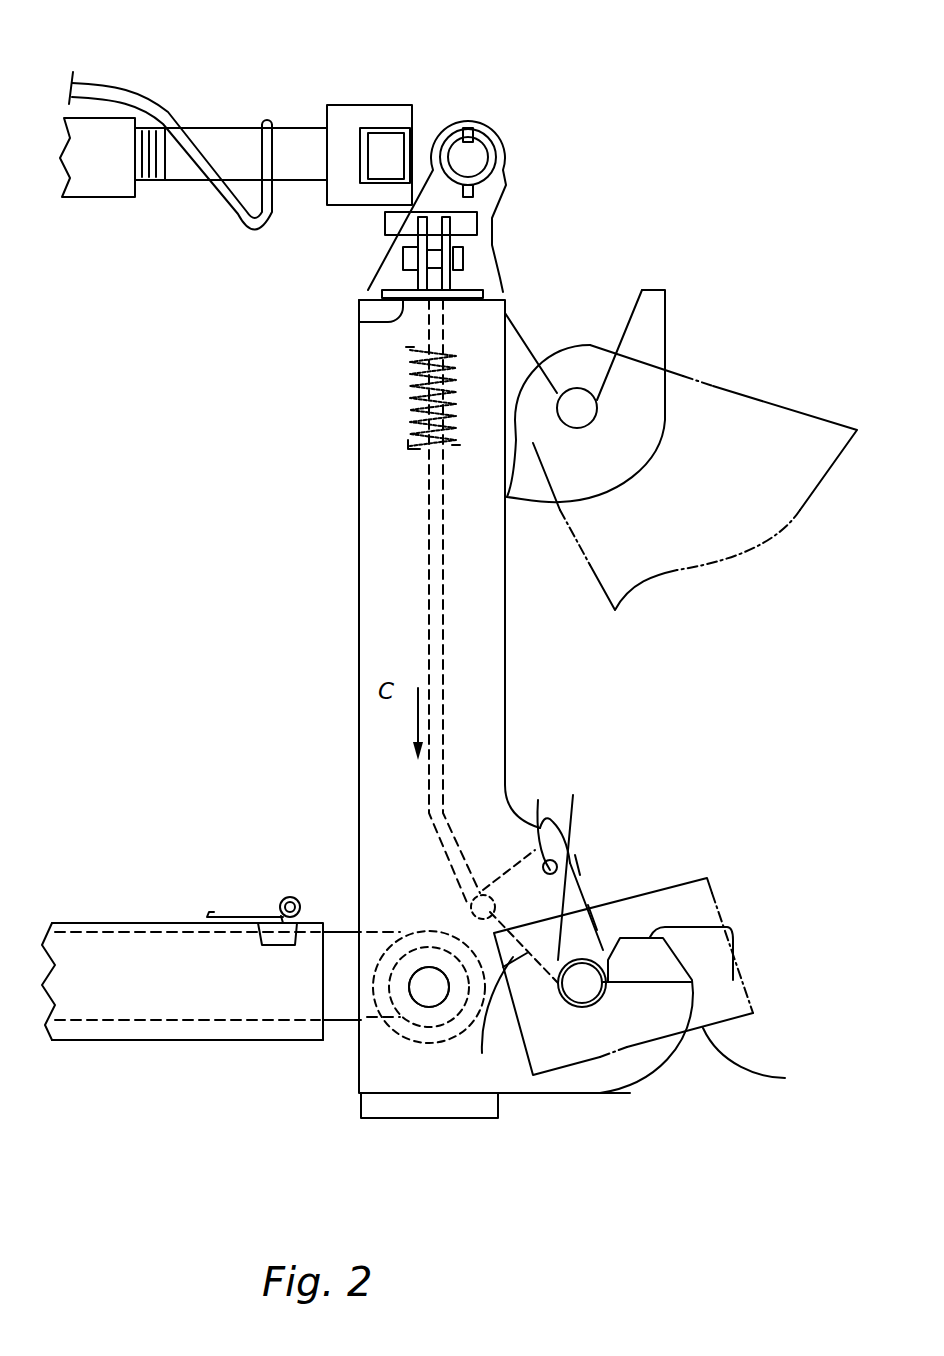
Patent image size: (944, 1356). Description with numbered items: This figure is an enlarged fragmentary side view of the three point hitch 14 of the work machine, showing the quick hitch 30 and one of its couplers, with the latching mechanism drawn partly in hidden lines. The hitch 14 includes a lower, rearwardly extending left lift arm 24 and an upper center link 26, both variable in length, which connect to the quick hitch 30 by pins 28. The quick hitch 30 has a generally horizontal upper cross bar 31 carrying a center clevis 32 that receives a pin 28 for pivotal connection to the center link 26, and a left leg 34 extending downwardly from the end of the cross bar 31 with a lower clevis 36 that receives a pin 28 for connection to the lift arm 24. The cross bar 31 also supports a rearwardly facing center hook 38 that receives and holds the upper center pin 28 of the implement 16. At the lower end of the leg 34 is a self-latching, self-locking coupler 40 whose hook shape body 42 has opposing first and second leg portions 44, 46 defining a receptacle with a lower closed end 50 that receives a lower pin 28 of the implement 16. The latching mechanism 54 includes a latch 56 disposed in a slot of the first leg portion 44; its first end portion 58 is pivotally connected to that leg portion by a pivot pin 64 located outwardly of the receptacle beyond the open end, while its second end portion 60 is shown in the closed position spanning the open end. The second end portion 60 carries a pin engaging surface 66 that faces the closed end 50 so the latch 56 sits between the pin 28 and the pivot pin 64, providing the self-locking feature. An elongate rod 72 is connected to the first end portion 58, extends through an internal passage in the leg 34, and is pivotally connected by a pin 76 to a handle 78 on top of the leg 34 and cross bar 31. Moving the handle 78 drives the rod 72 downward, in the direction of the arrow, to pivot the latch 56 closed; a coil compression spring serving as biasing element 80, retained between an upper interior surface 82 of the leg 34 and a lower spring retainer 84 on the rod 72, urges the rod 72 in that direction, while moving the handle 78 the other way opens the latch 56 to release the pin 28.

The hitch 14 is at (222, 1046).
The implement 16 is at (786, 1078).
The left lift arm 24 is at (103, 1040).
The center link 26 is at (300, 127).
The pin 28 is at (478, 128).
The quick hitch 30 is at (504, 212).
The cross bar 31 is at (505, 287).
The center clevis 32 is at (522, 158).
The left leg 34 is at (359, 638).
The clevis 36 is at (417, 968).
The center hook 38 is at (668, 310).
The coupler 40 is at (708, 1006).
The hook shape body 42 is at (662, 1062).
The first leg portion 44 is at (593, 913).
The second leg portion 46 is at (735, 927).
The closed end 50 is at (560, 1010).
The latching mechanism 54 is at (589, 864).
The latch 56 is at (482, 1053).
The first end portion 58 is at (590, 850).
The second end portion 60 is at (666, 889).
The pivot pin 64 is at (540, 820).
The pin engaging surface 66 is at (737, 981).
The rod 72 is at (445, 643).
The pin 76 is at (402, 256).
The handle 78 is at (385, 225).
The biasing element 80 is at (408, 388).
The upper interior surface 82 is at (359, 323).
The lower spring retainer 84 is at (408, 445).